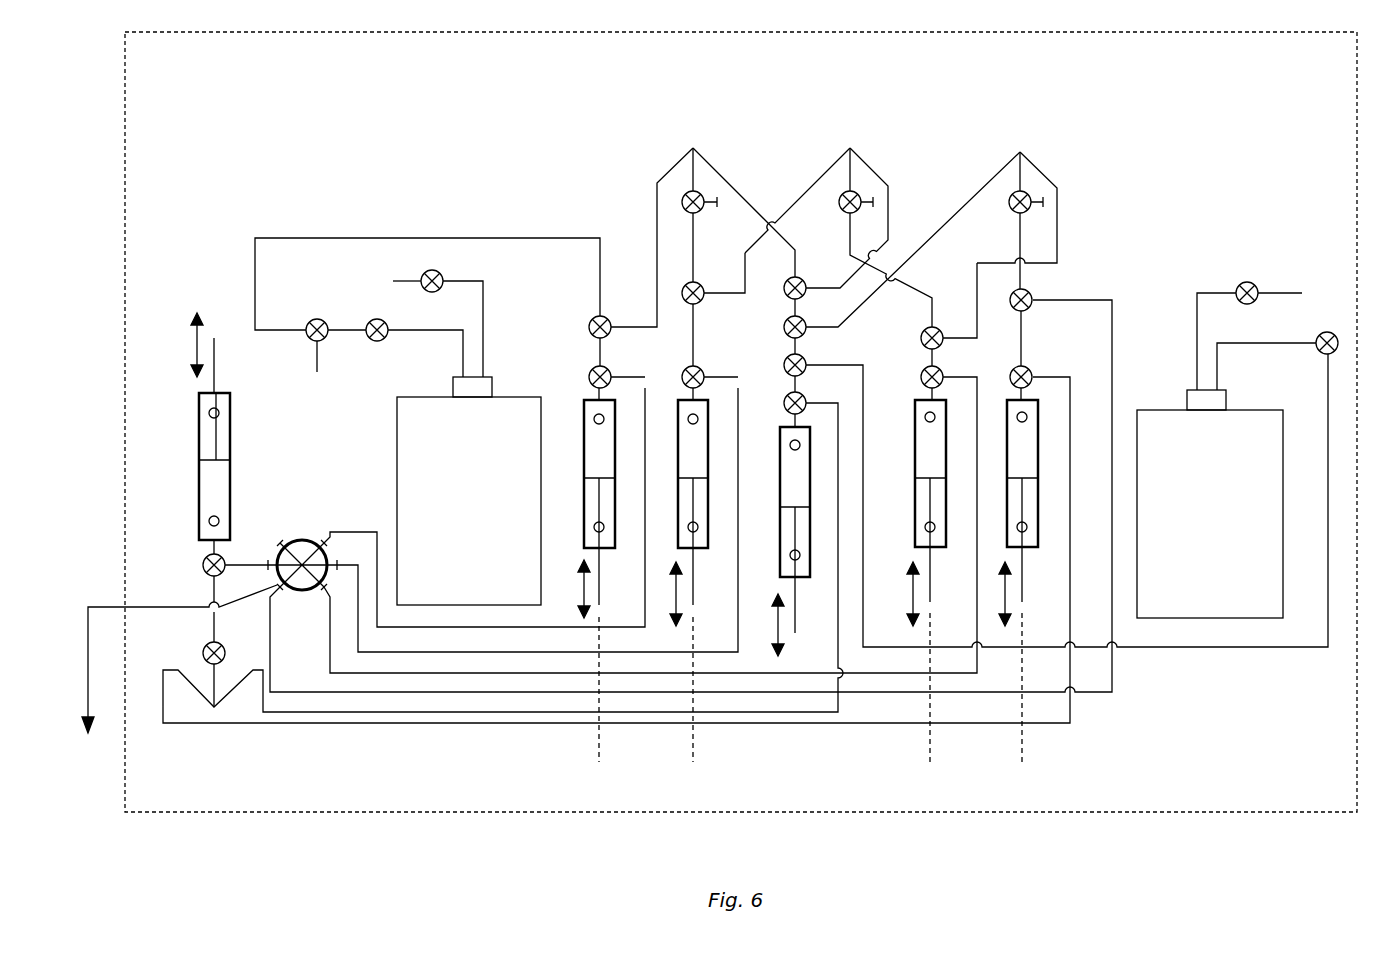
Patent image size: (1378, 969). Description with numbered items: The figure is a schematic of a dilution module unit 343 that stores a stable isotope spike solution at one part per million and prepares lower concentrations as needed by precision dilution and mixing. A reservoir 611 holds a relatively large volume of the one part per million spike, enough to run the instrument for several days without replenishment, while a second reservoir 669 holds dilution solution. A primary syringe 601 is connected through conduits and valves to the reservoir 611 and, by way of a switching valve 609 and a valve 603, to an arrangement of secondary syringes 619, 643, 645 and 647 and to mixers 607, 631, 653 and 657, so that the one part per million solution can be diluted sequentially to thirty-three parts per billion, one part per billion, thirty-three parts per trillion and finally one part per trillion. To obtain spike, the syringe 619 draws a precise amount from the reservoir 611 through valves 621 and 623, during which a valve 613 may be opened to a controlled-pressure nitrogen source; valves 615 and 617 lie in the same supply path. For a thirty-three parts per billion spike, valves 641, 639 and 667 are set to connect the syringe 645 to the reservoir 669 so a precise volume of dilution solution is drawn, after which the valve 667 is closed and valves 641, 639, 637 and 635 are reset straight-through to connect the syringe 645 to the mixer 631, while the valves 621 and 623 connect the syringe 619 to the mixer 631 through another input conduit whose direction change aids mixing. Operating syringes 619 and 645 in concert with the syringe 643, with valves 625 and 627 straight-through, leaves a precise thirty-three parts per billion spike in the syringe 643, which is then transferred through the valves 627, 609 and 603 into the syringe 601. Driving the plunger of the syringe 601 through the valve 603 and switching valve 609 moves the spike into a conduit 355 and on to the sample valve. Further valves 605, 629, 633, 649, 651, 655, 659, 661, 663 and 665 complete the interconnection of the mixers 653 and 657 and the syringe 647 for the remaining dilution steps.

The dilution module unit 343 is at (123, 291).
The conduit 355 is at (107, 606).
The primary syringe 601 is at (195, 494).
The valve 603 is at (202, 567).
The valve 605 is at (200, 660).
The mixer 607 is at (202, 712).
The switching valve 609 is at (302, 530).
The reservoir 611 is at (464, 443).
The valve 613 is at (436, 269).
The UPW valve 615 is at (316, 318).
The valve 617 is at (383, 319).
The secondary syringe 619 is at (583, 427).
The valve 621 is at (604, 366).
The valve 623 is at (593, 316).
The valve 625 is at (702, 305).
The valve 627 is at (702, 366).
The vent valve 629 is at (706, 212).
The mixer 631 is at (646, 178).
The vent valve 633 is at (838, 205).
The valve 635 is at (800, 276).
The valve 637 is at (801, 316).
The valve 639 is at (801, 354).
The valve 641 is at (801, 392).
The secondary syringe 643 is at (708, 537).
The secondary syringe 645 is at (778, 452).
The secondary syringe 647 is at (913, 483).
The valve 649 is at (920, 378).
The valve 651 is at (920, 339).
The mixer 653 is at (815, 168).
The vent valve 655 is at (1007, 206).
The mixer 657 is at (968, 180).
The valve 659 is at (1037, 296).
The valve 661 is at (1033, 373).
The syringe pump 663 is at (1003, 406).
The N2 valve 665 is at (1243, 281).
The valve 667 is at (1322, 332).
The reservoir 669 is at (1210, 504).